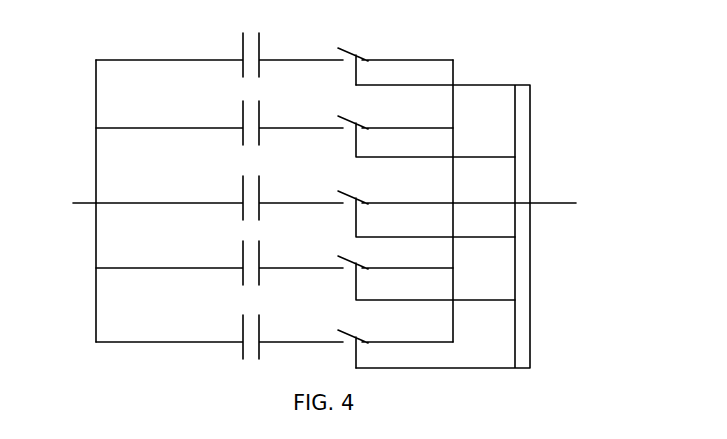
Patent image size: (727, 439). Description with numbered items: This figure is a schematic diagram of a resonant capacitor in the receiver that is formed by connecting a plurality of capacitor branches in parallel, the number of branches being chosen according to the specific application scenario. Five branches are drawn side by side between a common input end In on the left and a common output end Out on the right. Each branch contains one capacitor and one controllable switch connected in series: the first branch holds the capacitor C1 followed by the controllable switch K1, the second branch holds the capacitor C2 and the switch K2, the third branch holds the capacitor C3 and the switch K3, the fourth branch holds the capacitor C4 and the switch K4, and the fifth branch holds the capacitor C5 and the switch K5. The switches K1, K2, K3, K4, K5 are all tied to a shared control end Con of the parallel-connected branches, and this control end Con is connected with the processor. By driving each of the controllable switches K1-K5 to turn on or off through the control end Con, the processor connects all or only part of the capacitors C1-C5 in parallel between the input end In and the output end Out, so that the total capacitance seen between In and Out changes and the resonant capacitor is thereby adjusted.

The capacitor C1 is at (219, 43).
The capacitor C2 is at (219, 111).
The capacitor C3 is at (219, 186).
The capacitor C4 is at (219, 251).
The capacitor C5 is at (219, 325).
The controllable switch K1 is at (392, 53).
The controllable switch K2 is at (423, 123).
The controllable switch K3 is at (423, 200).
The controllable switch K4 is at (423, 264).
The controllable switch K5 is at (392, 335).
The control end Con is at (521, 85).
The input end In is at (58, 201).
The output end Out is at (537, 207).